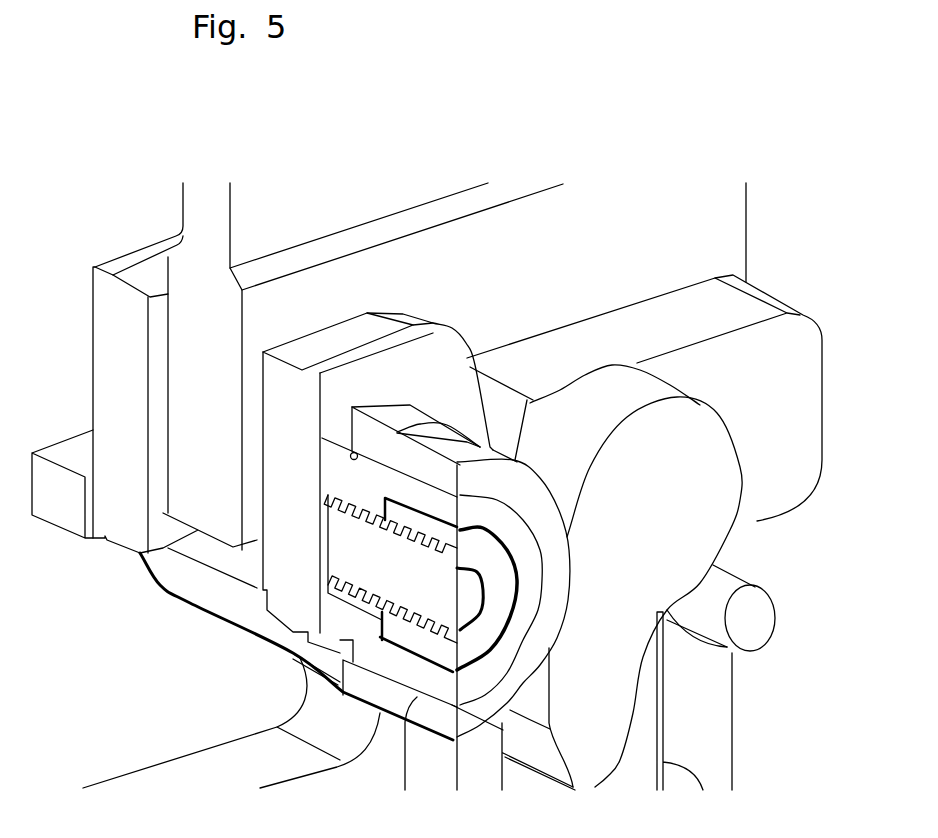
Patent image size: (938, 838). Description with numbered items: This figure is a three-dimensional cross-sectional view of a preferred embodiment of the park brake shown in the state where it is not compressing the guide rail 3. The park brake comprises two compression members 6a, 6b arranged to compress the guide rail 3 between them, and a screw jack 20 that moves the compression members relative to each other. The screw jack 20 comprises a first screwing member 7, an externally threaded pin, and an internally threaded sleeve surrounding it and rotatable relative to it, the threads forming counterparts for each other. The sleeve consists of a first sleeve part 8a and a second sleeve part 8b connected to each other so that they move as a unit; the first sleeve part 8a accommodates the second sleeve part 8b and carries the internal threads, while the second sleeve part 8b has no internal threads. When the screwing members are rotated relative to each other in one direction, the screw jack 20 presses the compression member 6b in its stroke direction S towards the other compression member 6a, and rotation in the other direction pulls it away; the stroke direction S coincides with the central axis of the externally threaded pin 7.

The guide rail 3 is at (738, 213).
The compression member 6a is at (128, 521).
The compression member 6b is at (303, 582).
The first screwing member 7 is at (440, 592).
The first sleeve part 8a is at (495, 517).
The second sleeve part 8b is at (492, 560).
The screw jack 20 is at (490, 426).
The stroke direction S is at (0, 425).